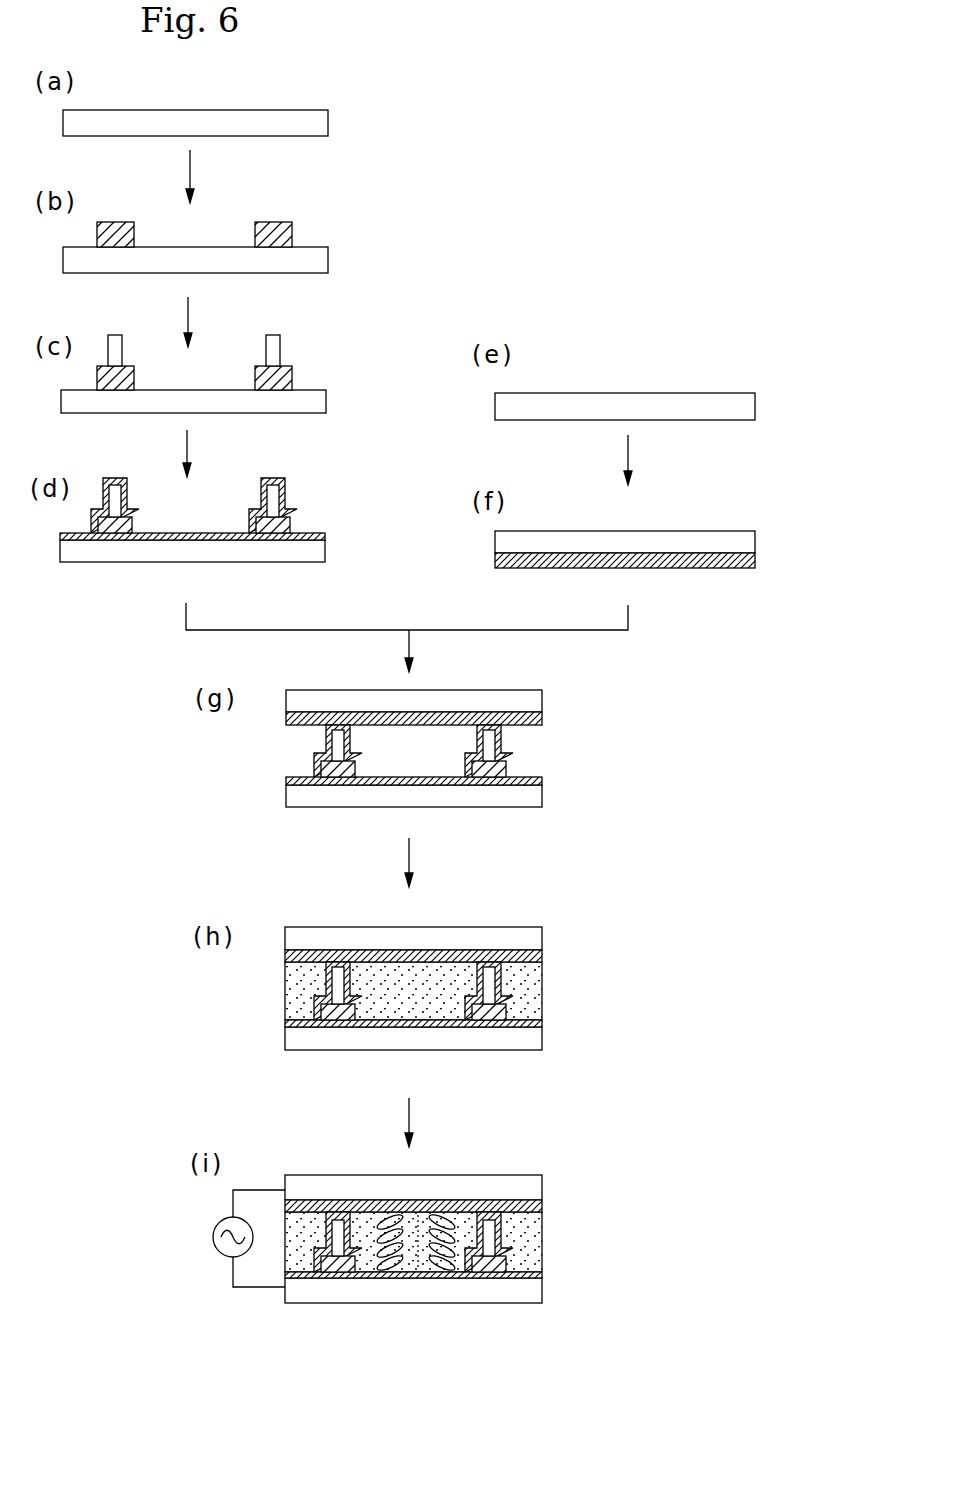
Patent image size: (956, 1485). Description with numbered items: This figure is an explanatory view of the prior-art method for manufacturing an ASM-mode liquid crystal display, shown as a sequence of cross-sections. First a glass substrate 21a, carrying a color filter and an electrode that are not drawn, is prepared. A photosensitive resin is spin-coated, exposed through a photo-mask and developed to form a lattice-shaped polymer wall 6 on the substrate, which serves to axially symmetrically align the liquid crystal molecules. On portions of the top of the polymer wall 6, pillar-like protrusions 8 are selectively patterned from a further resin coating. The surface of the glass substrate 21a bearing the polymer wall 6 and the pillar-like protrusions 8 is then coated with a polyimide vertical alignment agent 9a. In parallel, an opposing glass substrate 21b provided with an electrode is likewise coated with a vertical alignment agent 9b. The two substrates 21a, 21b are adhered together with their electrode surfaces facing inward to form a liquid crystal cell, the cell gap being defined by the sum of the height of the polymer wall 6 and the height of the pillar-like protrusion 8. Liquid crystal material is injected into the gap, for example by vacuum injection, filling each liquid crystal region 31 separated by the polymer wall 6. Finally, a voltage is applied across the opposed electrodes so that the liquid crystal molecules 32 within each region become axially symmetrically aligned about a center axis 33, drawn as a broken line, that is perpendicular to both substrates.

The glass substrate 21a is at (320, 126).
The opposing glass substrate 21b is at (700, 405).
The polymer wall 6 is at (293, 228).
The pillar-like protrusion 8 is at (277, 352).
The vertical alignment agent 9a is at (270, 479).
The vertical alignment agent 9b is at (693, 568).
The liquid crystal region 31 is at (385, 1003).
The liquid crystal molecules 32 is at (437, 1265).
The center axis 33 is at (413, 1255).